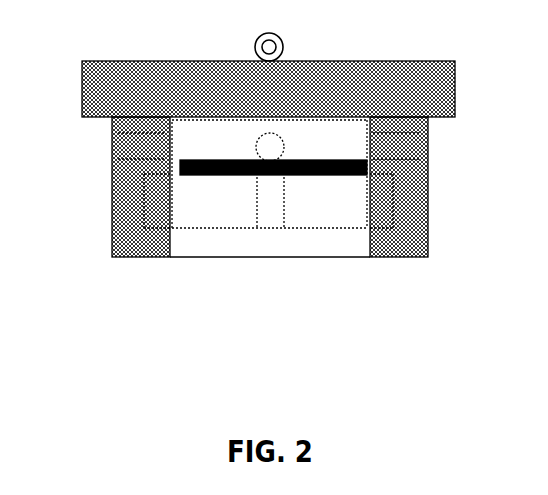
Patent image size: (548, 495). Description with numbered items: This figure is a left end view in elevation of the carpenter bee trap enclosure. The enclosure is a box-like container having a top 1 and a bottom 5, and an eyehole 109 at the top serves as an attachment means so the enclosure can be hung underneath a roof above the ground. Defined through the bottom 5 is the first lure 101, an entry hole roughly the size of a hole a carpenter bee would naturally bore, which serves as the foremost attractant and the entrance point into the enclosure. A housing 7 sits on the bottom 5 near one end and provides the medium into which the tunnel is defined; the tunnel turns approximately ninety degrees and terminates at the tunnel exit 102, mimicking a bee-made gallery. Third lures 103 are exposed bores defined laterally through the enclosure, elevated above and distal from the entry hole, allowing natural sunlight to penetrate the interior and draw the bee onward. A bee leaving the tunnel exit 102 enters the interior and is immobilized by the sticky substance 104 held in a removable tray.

The top 1 is at (415, 60).
The bottom 5 is at (193, 207).
The housing 7 is at (223, 138).
The first lure 101 is at (270, 230).
The tunnel exit 102 is at (272, 133).
The third lure 103 is at (264, 133).
The sticky substance 104 is at (197, 158).
The eyeholes 109 is at (283, 35).